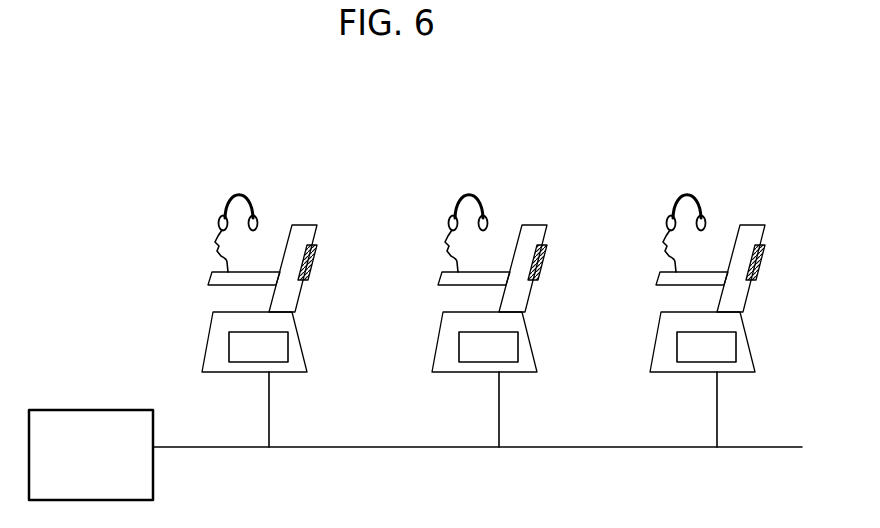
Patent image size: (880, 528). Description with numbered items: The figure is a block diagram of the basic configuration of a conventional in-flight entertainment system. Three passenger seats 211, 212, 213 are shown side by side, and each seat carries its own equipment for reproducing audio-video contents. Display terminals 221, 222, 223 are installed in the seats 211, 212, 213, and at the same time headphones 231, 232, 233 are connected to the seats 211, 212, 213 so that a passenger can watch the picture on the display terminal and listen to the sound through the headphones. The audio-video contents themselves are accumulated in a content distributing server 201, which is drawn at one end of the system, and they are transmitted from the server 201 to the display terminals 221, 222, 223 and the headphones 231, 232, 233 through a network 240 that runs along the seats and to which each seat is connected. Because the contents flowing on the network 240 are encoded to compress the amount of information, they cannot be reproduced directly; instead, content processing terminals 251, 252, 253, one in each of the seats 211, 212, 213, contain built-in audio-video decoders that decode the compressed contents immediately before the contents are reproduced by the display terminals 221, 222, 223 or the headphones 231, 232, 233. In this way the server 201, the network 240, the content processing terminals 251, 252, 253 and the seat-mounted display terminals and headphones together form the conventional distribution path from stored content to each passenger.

The content distributing server 201 is at (82, 410).
The seat 211 is at (203, 340).
The seat 212 is at (432, 338).
The seat 213 is at (653, 337).
The display terminal 221 is at (318, 258).
The display terminal 222 is at (548, 258).
The display terminal 223 is at (763, 270).
The headphones 231 is at (252, 193).
The headphones 232 is at (482, 193).
The headphones 233 is at (700, 193).
The network 240 is at (358, 447).
The content processing terminal 251 is at (241, 363).
The content processing terminal 252 is at (468, 360).
The content processing terminal 253 is at (690, 360).